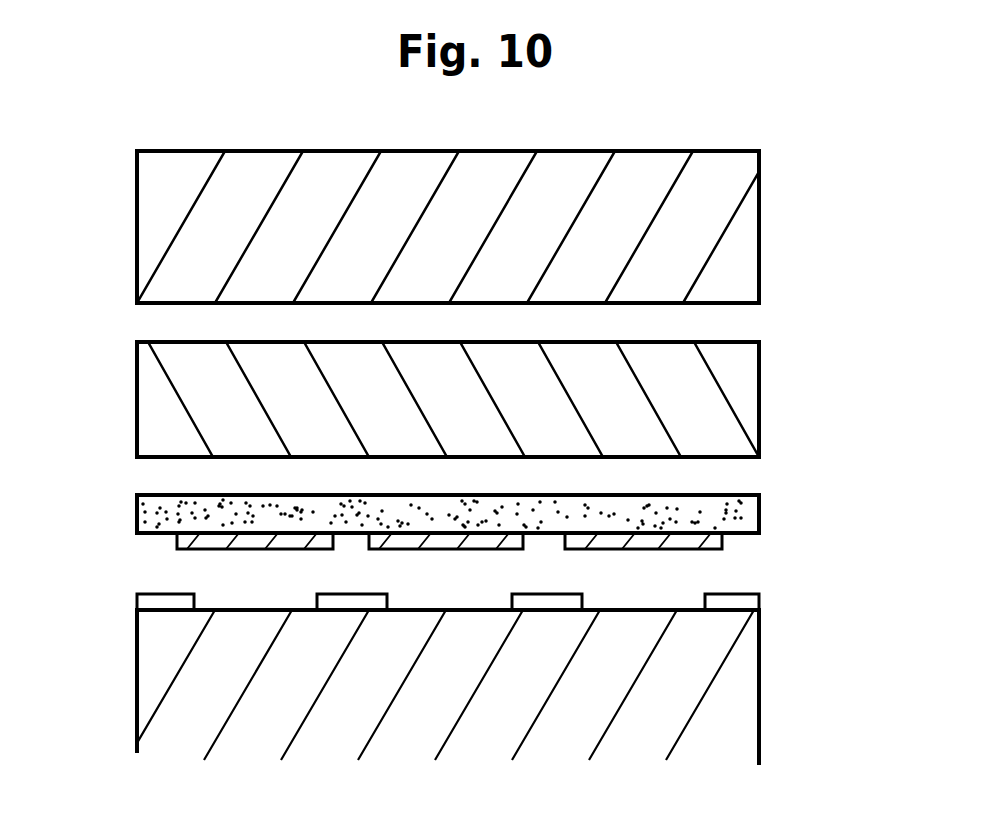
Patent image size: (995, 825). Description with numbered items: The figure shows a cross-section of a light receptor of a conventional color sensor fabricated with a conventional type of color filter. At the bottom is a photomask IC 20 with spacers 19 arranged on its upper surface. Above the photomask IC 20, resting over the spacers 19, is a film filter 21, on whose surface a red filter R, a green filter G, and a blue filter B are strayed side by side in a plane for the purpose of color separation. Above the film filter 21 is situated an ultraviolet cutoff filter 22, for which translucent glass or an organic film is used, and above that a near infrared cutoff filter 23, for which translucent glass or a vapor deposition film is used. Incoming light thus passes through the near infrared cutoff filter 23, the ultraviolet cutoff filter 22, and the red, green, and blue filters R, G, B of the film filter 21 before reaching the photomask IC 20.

The near infrared cutoff filter 23 is at (760, 235).
The ultraviolet cutoff filter 22 is at (760, 395).
The film filter 21 is at (760, 515).
The red filter R is at (200, 549).
The green filter G is at (448, 550).
The blue filter B is at (722, 551).
The spacers 19 is at (760, 603).
The photomask IC 20 is at (760, 683).